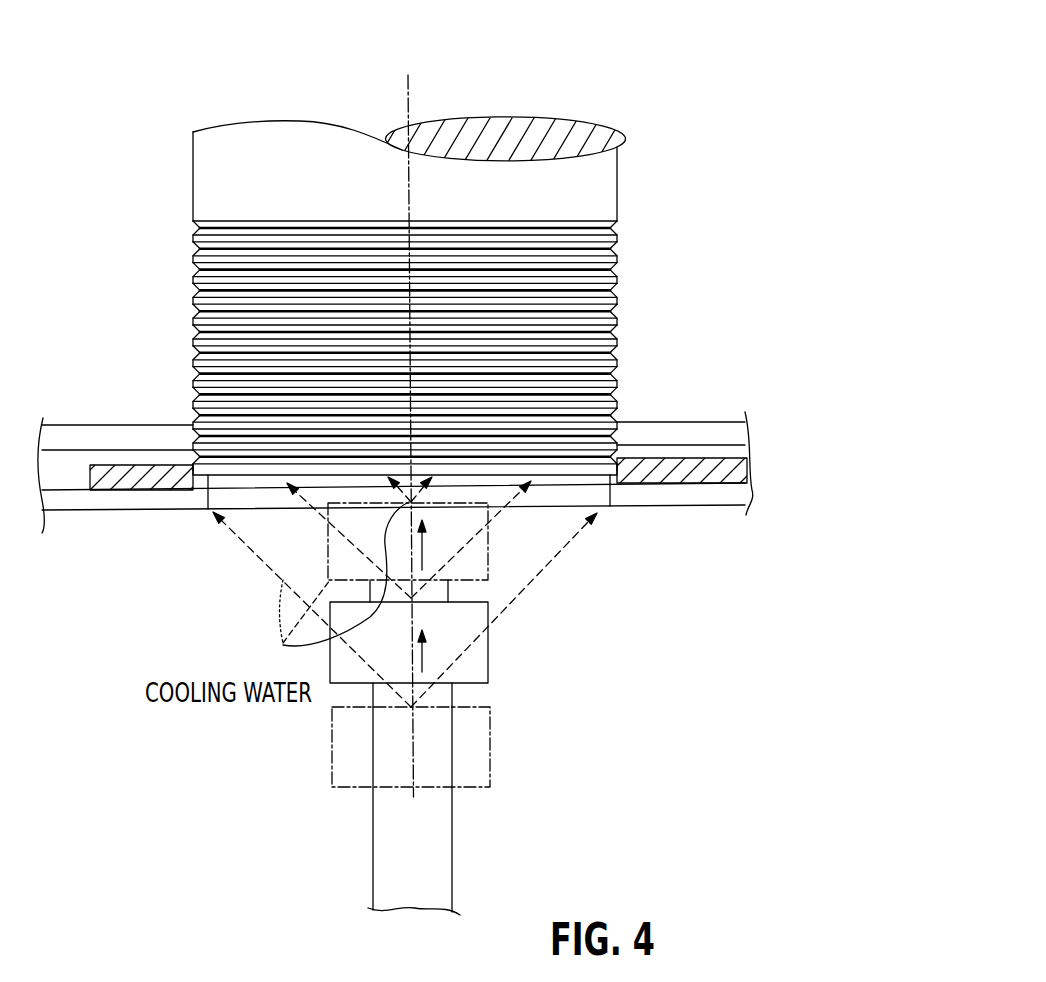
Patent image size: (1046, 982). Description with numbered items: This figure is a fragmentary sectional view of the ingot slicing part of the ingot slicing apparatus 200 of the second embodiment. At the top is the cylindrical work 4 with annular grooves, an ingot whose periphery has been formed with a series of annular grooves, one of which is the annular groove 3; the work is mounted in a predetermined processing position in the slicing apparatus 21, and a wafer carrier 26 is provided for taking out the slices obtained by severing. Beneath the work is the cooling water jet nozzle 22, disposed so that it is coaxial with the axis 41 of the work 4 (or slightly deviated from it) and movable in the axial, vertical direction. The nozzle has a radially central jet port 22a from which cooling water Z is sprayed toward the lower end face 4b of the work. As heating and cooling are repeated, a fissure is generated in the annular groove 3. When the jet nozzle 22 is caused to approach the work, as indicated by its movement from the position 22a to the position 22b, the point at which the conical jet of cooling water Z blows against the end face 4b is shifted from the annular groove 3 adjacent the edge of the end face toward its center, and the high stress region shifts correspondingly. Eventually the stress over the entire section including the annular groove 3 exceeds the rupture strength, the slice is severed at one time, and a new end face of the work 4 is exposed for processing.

The ingot slicing apparatus 200 is at (517, 88).
The cylindrical work with annular grooves 4 is at (583, 199).
The axis of the cylindrical work 41 is at (406, 178).
The annular groove 3 is at (617, 285).
The end face of the work 4b is at (256, 477).
The slicing apparatus 21 is at (118, 428).
The wafer carrier 26 is at (703, 477).
The cooling water jet nozzle 22 is at (488, 672).
The raised position of the jet nozzle 22b is at (488, 550).
The radially central jet port 22a is at (490, 770).
The cooling water Z is at (299, 629).